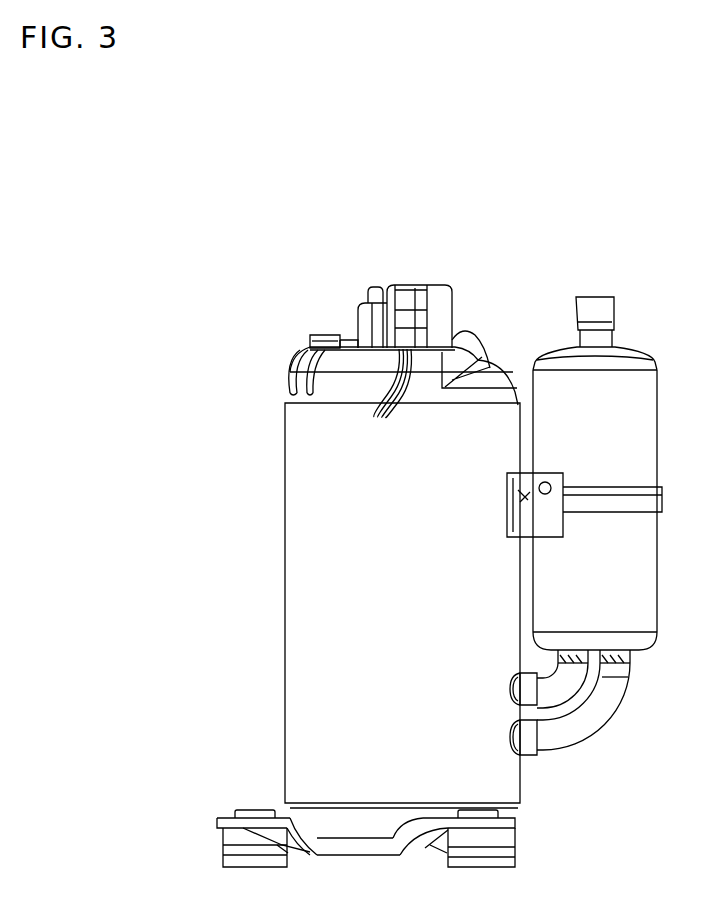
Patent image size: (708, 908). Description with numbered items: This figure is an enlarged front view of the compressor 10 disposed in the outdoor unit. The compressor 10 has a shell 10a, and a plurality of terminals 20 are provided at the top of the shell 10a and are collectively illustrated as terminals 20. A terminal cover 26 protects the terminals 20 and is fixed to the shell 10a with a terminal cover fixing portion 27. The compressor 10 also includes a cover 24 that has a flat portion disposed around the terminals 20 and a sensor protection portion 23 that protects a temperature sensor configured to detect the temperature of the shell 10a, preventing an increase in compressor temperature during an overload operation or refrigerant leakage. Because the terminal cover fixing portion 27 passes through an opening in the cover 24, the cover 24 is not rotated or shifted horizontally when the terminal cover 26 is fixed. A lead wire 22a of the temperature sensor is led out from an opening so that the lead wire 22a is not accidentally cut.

The compressor 10 is at (350, 569).
The shell 10a is at (350, 520).
The terminals 20 is at (388, 331).
The lead wire 22a is at (295, 372).
The sensor protection portion 23 is at (312, 336).
The cover 24 is at (348, 329).
The terminal cover 26 is at (450, 287).
The terminal cover fixing portion 27 is at (365, 252).